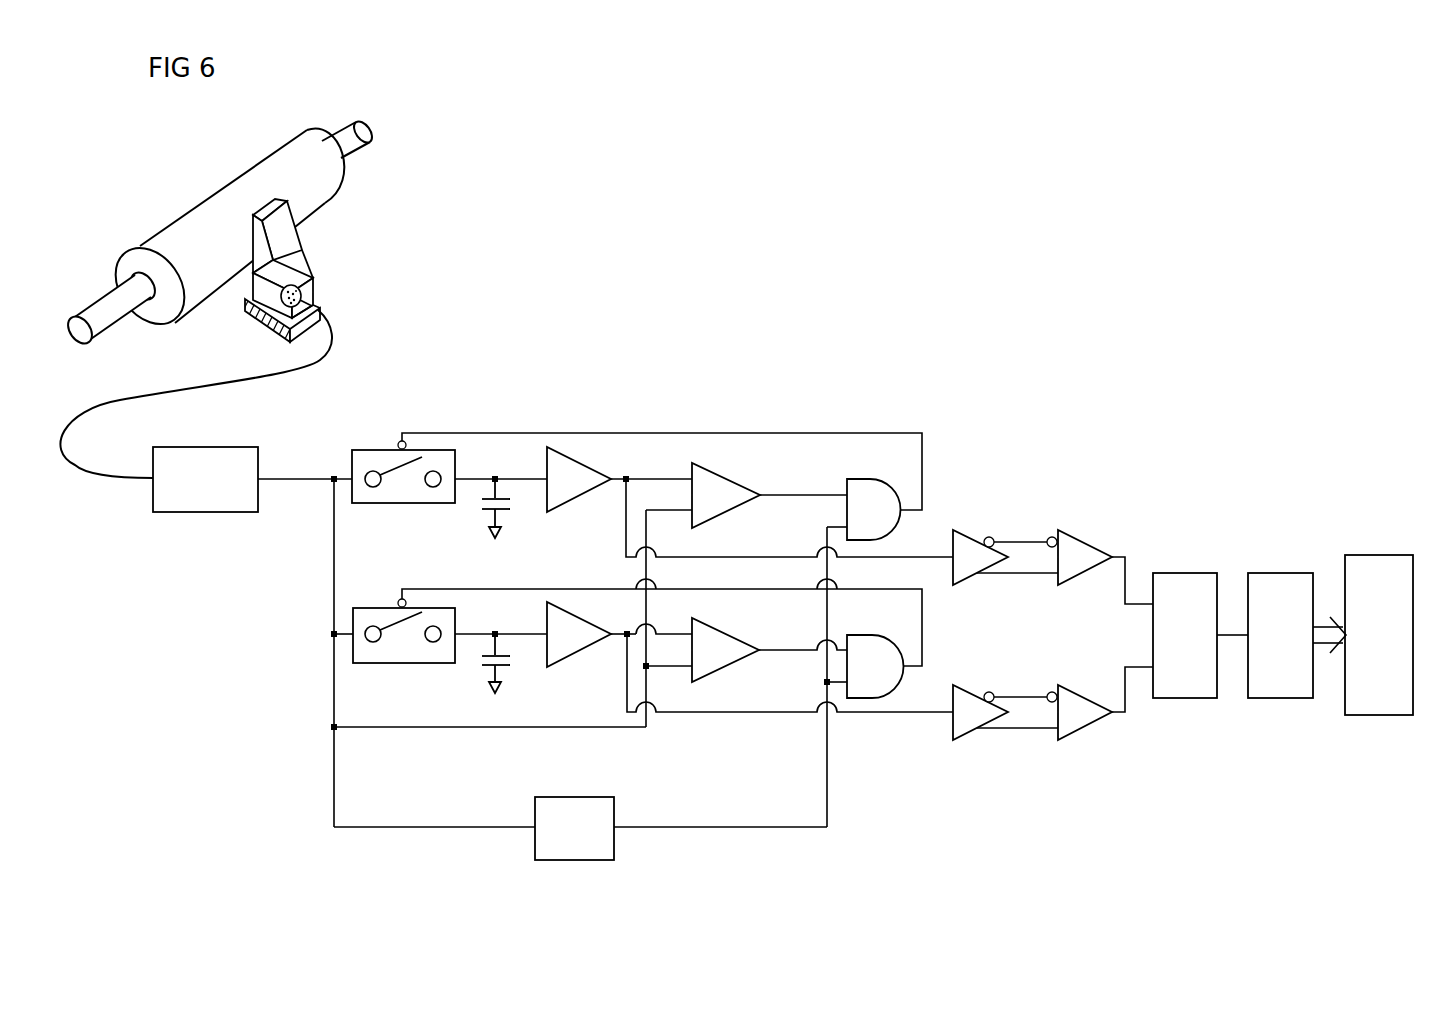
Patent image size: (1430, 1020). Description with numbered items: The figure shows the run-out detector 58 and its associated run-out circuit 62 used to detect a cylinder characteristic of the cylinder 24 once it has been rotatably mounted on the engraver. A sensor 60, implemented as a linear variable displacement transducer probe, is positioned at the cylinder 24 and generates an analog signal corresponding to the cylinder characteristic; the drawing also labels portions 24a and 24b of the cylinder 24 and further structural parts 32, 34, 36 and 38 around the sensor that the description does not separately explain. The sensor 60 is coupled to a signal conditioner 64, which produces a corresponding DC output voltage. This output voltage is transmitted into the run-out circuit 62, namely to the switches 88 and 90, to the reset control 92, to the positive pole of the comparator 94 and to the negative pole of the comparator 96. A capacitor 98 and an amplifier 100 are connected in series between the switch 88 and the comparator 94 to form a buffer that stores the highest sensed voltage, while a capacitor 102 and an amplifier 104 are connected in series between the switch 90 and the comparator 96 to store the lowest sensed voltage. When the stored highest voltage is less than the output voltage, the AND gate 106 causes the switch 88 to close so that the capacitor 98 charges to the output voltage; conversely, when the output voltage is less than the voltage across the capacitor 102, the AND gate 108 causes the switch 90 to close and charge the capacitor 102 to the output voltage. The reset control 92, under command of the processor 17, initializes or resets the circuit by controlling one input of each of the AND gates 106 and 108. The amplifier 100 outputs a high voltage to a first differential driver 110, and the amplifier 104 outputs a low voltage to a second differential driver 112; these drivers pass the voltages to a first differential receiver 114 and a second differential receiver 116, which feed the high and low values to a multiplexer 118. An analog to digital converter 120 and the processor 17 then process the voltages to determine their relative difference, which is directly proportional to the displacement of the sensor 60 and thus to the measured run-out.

The processor 17 is at (1373, 555).
The cylinder 24 is at (239, 215).
The roller shaft 24a is at (113, 303).
The roller shaft tip 24b is at (360, 140).
The sensor block 32 is at (285, 240).
The sensor head 34 is at (290, 239).
The roller surface 36 is at (183, 210).
The sensor base plate 38 is at (267, 333).
The run-out detector 58 is at (527, 360).
The sensor 60 is at (308, 289).
The run-out circuit 62 is at (718, 385).
The signal conditioner 64 is at (193, 512).
The switch 88 is at (385, 503).
The switch 90 is at (385, 663).
The reset control 92 is at (580, 797).
The comparator 94 is at (743, 482).
The comparator 96 is at (742, 642).
The capacitor 98 is at (503, 512).
The amplifier 100 is at (580, 497).
The capacitor 102 is at (503, 668).
The amplifier 104 is at (580, 652).
The AND gate 106 is at (890, 480).
The AND gate 108 is at (887, 635).
The first differential driver 110 is at (963, 530).
The second differential driver 112 is at (963, 687).
The first differential receiver 114 is at (1080, 533).
The second differential receiver 116 is at (1080, 690).
The multiplexer 118 is at (1188, 572).
The analog to digital converter 120 is at (1282, 572).